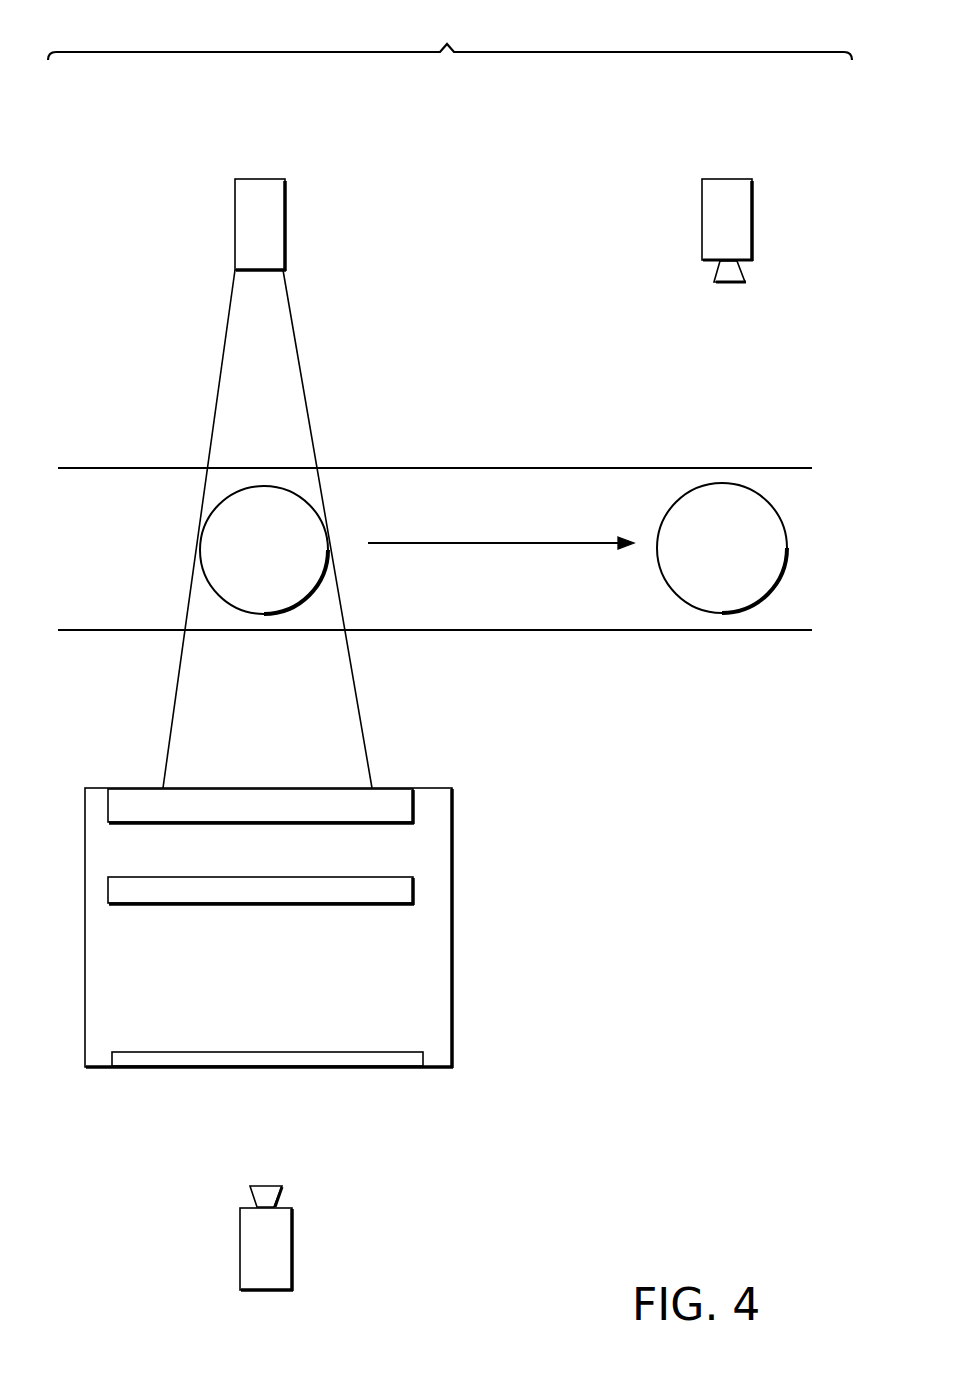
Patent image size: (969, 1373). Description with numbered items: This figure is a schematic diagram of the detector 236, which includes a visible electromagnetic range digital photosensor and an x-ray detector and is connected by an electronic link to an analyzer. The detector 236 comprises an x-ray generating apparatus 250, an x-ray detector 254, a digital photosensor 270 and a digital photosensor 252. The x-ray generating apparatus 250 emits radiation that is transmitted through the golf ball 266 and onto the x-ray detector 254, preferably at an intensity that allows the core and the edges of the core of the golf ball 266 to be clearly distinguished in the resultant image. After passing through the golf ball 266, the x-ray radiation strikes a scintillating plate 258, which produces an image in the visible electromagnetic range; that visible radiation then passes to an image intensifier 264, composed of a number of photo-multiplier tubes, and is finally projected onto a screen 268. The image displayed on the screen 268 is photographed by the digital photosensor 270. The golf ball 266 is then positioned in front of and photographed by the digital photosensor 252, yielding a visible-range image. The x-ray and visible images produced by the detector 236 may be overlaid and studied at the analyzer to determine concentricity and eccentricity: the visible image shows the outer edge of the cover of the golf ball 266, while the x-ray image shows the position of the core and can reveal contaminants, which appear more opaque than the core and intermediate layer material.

The detector 236 is at (450, 34).
The x-ray generating apparatus 250 is at (263, 178).
The digital photosensor 252 is at (725, 178).
The x-ray detector 254 is at (453, 983).
The scintillating plate 258 is at (414, 805).
The image intensifier 264 is at (414, 893).
The golf ball 266 is at (493, 548).
The screen 268 is at (403, 1058).
The digital photosensor 270 is at (293, 1257).